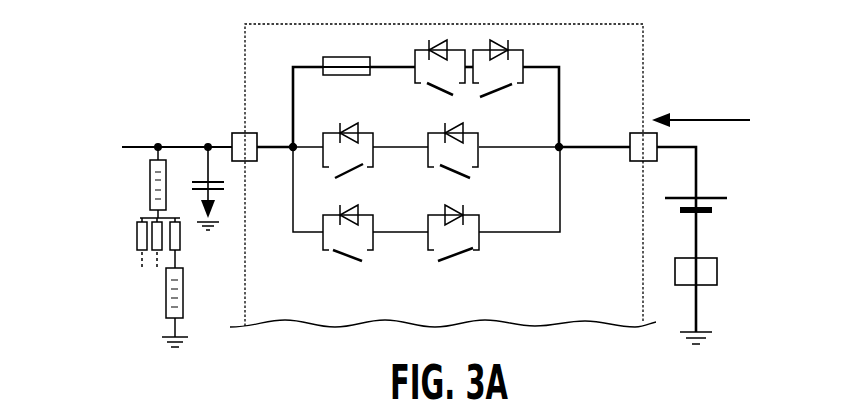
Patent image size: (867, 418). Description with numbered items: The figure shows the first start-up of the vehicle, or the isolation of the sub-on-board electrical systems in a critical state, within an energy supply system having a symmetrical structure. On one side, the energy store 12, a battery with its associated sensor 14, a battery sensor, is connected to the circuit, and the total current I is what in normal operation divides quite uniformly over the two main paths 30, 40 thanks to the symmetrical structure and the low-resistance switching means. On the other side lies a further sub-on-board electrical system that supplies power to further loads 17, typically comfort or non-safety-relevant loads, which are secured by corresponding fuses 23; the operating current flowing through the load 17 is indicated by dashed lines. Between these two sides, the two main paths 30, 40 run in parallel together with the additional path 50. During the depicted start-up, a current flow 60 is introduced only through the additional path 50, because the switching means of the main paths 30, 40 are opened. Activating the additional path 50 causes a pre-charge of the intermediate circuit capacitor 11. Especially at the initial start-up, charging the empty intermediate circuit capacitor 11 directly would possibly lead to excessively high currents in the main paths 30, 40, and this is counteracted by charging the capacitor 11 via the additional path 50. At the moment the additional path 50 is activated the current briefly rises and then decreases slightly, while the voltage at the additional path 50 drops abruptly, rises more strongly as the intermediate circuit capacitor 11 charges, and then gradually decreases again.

The intermediate circuit capacitor 11 is at (203, 176).
The energy store 12 is at (713, 197).
The sensor 14 is at (717, 268).
The further loads 17 is at (167, 293).
The fuses 23 is at (118, 228).
The main path 30 is at (401, 146).
The main path 40 is at (542, 232).
The additional path 50 is at (542, 66).
The current flow 60 is at (605, 146).
The total current I is at (718, 117).